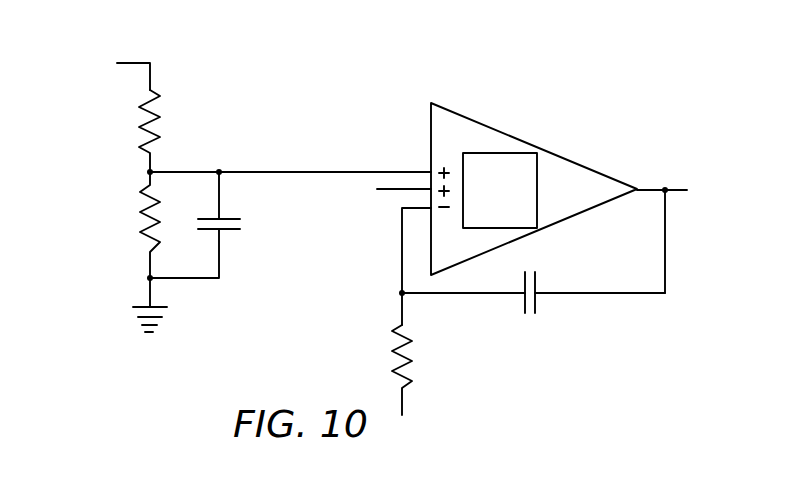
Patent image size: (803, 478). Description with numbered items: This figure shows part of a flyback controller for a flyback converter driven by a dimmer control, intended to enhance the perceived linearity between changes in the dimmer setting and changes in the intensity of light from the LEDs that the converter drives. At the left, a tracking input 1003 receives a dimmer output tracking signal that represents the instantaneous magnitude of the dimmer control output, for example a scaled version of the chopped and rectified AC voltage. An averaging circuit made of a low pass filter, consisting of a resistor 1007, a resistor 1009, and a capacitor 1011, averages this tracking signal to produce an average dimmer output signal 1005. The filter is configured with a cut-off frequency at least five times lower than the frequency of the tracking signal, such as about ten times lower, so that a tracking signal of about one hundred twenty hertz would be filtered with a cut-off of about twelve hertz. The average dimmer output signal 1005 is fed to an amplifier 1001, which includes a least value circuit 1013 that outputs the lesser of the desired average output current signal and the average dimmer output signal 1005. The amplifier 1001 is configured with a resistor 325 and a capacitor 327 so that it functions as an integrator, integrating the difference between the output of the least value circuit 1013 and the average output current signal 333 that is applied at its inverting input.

The amplifier 1001 is at (457, 113).
The tracking input 1003 is at (128, 63).
The average dimmer output signal 1005 is at (175, 170).
The resistor 1007 is at (142, 127).
The resistor 1009 is at (143, 238).
The capacitor 1011 is at (240, 224).
The least value circuit 1013 is at (502, 152).
The capacitor 327 is at (385, 189).
The average output current signal 333 is at (400, 273).
The resistor 325 is at (410, 363).